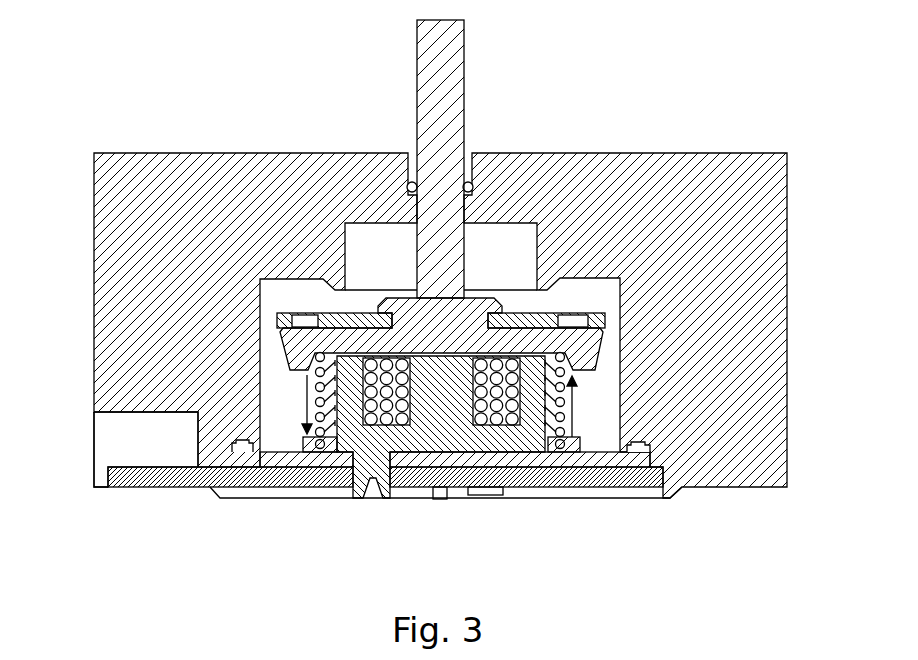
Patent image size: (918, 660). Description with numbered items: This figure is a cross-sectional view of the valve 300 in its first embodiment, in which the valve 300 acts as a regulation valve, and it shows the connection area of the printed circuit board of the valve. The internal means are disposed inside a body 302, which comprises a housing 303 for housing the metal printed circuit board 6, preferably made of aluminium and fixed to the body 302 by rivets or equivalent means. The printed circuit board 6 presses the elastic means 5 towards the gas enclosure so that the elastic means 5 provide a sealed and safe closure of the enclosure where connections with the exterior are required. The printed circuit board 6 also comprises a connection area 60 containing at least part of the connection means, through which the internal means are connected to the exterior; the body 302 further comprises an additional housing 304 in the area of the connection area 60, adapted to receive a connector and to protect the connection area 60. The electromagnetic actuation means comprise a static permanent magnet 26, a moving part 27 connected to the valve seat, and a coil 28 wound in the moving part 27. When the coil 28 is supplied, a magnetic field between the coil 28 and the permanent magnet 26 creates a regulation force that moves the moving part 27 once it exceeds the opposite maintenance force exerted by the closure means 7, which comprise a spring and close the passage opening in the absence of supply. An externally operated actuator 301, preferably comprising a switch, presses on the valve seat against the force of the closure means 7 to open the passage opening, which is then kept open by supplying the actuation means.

The valve 300 is at (200, 118).
The actuator 301 is at (440, 80).
The body 302 is at (124, 275).
The housing 303 is at (664, 476).
The additional housing 304 is at (172, 416).
The connection area 60 is at (153, 457).
The moving part 27 is at (422, 337).
The coil 28 is at (337, 358).
The closure means 7 is at (543, 357).
The permanent magnet 26 is at (430, 428).
The elastic means 5 is at (310, 438).
The printed circuit board 6 is at (577, 478).